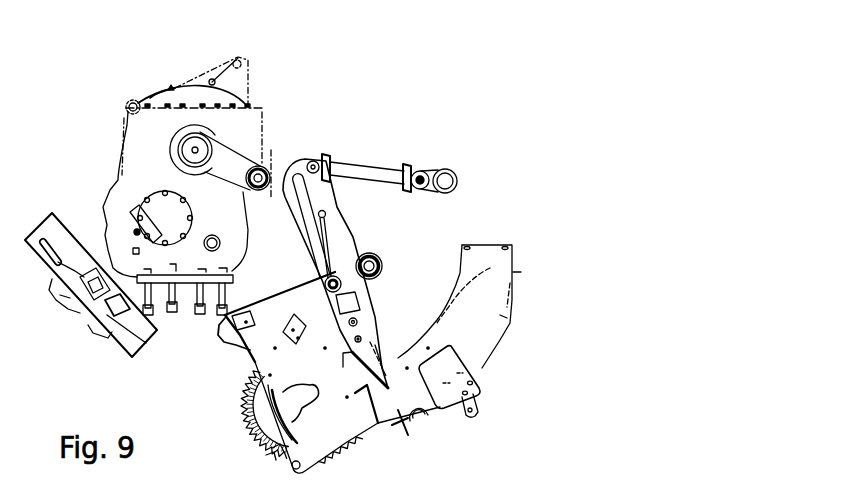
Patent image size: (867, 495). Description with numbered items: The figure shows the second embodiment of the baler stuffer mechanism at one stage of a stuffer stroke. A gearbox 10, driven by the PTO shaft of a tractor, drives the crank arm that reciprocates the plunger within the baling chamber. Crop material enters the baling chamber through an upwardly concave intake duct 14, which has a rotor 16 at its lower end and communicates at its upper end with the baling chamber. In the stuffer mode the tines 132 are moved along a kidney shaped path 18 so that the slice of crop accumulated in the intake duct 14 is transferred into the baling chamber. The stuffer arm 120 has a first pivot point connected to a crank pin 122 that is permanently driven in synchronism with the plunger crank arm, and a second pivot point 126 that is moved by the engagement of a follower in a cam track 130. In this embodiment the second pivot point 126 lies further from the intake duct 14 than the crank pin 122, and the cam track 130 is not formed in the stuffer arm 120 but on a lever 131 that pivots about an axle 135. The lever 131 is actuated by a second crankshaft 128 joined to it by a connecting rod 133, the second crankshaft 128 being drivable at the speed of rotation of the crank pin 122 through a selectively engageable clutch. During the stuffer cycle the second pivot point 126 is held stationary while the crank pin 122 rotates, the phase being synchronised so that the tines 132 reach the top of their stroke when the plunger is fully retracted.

The gearbox 10 is at (158, 95).
The intake duct 14 is at (496, 352).
The rotor 16 is at (240, 424).
The kidney shaped path 18 is at (487, 270).
The stuffer arm 120 is at (374, 318).
The crank pin 122 is at (326, 282).
The second pivot point 126 is at (318, 216).
The second crankshaft 128 is at (445, 170).
The cam track 130 is at (314, 188).
The lever 131 is at (352, 232).
The tines 132 is at (382, 372).
The connecting rod 133 is at (345, 170).
The axle 135 is at (376, 262).